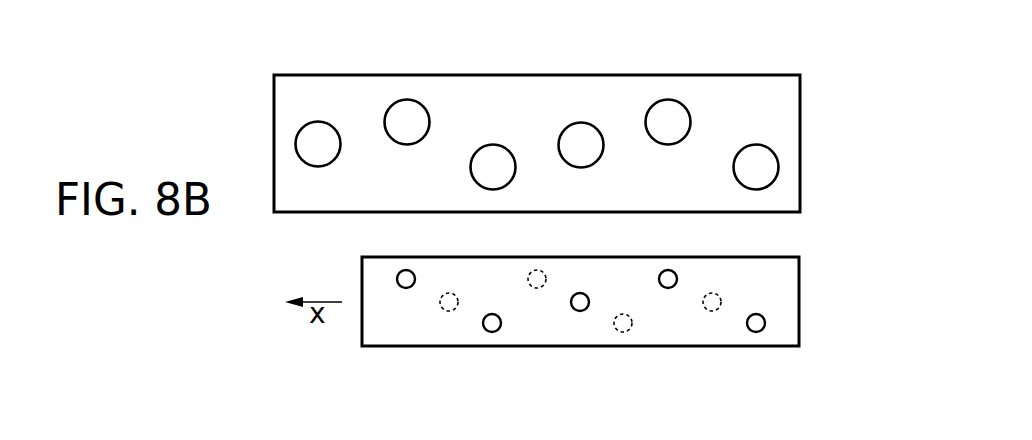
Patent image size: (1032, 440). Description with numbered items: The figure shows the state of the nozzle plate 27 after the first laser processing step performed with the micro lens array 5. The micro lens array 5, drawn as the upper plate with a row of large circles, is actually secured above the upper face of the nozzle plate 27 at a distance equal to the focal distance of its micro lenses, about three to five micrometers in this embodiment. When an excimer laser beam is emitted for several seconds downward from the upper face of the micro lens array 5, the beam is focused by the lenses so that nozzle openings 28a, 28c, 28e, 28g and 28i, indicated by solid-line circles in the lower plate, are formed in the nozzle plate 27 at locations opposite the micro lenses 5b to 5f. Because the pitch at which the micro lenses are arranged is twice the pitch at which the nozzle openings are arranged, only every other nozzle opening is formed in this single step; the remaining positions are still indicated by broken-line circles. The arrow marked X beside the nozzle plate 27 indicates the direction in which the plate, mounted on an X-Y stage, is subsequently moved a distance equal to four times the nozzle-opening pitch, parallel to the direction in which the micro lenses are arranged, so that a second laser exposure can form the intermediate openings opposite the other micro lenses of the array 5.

The micro lens array 5 is at (783, 114).
The micro lens 5b is at (404, 112).
The micro lens 5f is at (757, 160).
The nozzle plate 27 is at (781, 297).
The nozzle opening 28a is at (406, 282).
The nozzle opening 28c is at (492, 326).
The nozzle opening 28e is at (580, 305).
The nozzle opening 28g is at (668, 282).
The nozzle opening 28i is at (756, 326).